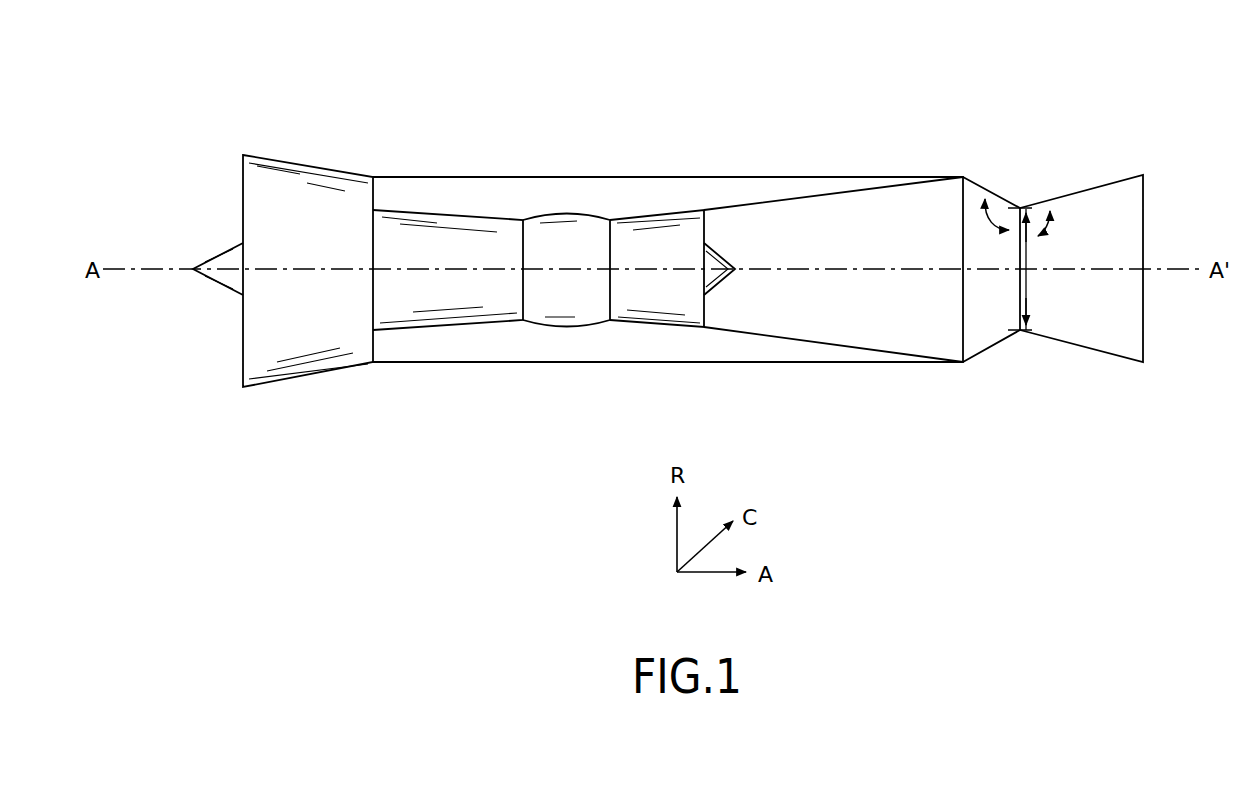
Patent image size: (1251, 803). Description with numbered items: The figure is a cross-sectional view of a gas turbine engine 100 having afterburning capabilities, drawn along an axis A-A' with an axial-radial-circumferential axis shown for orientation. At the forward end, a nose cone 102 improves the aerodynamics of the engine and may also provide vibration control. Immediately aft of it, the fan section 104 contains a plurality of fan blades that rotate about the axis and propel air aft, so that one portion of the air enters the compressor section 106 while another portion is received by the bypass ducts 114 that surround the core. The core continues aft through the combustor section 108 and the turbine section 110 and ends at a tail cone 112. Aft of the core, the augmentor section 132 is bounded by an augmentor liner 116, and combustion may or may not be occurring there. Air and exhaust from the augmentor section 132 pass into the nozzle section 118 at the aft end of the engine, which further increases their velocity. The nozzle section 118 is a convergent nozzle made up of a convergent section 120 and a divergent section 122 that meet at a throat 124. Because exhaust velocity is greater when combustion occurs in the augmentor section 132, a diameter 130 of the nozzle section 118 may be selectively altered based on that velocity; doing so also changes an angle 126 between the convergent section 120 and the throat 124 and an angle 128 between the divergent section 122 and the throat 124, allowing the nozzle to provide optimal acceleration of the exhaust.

The gas turbine engine 100 is at (150, 102).
The nose cone 102 is at (221, 287).
The fan section 104 is at (277, 197).
The compressor section 106 is at (438, 235).
The combustor section 108 is at (573, 307).
The turbine section 110 is at (657, 235).
The tail cone 112 is at (723, 250).
The bypass ducts 114 is at (442, 362).
The augmentor liner 116 is at (795, 340).
The nozzle section 118 is at (1021, 300).
The convergent section 120 is at (994, 345).
The divergent section 122 is at (1078, 348).
The throat 124 is at (1028, 297).
The angle 126 is at (1000, 231).
The angle 128 is at (1048, 230).
The diameter 130 is at (1028, 283).
The augmentor section 132 is at (822, 225).